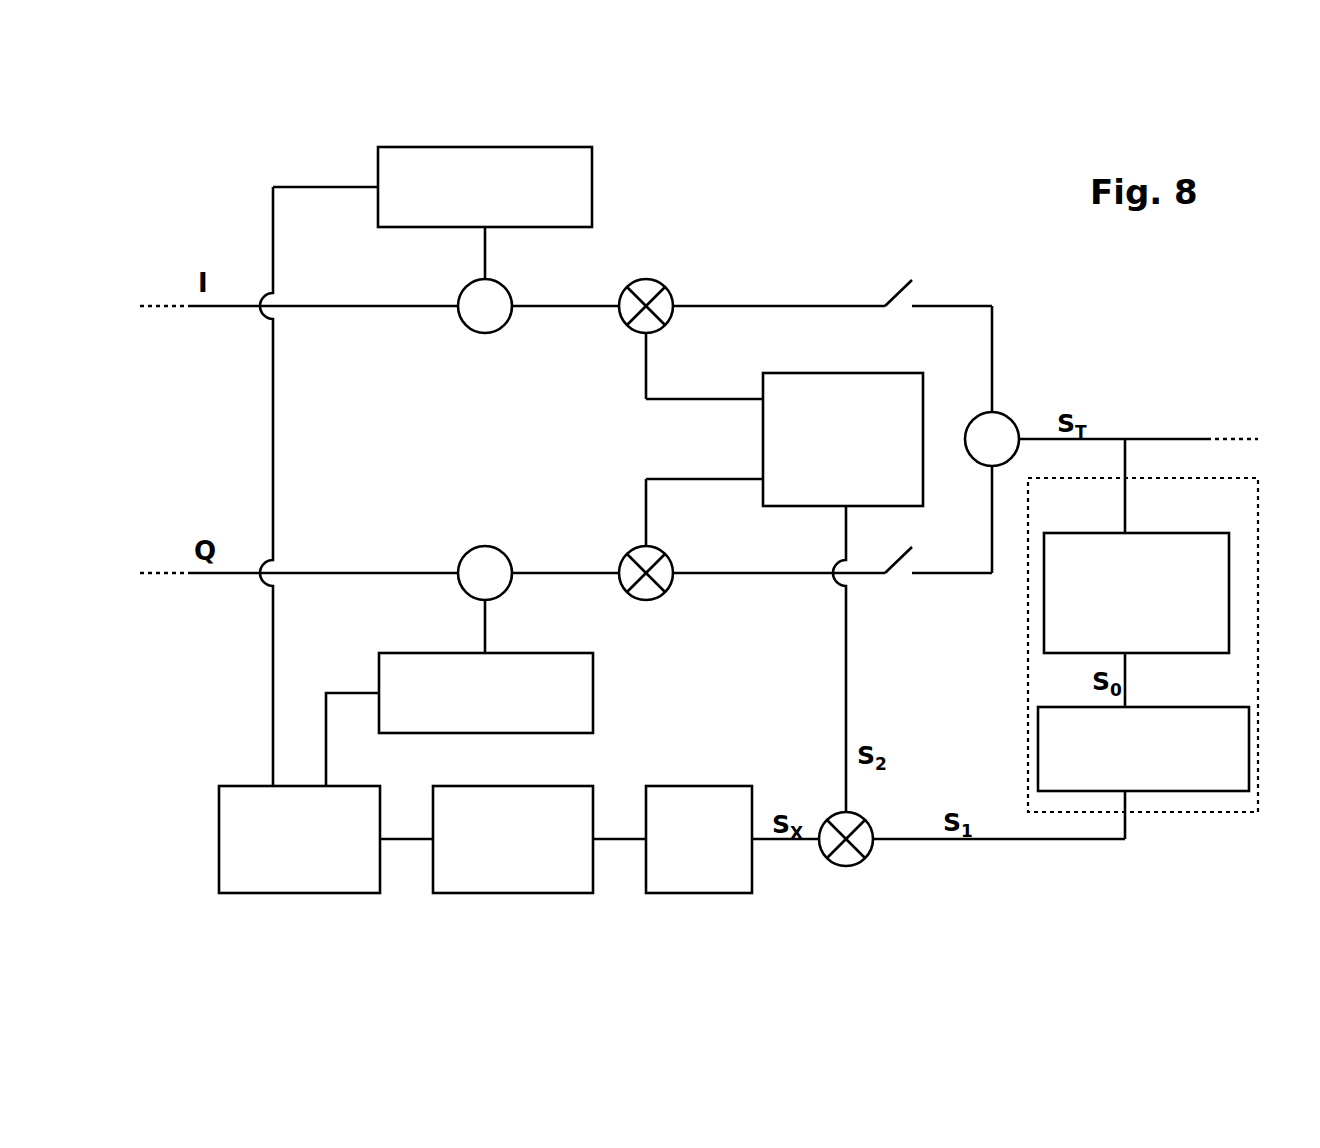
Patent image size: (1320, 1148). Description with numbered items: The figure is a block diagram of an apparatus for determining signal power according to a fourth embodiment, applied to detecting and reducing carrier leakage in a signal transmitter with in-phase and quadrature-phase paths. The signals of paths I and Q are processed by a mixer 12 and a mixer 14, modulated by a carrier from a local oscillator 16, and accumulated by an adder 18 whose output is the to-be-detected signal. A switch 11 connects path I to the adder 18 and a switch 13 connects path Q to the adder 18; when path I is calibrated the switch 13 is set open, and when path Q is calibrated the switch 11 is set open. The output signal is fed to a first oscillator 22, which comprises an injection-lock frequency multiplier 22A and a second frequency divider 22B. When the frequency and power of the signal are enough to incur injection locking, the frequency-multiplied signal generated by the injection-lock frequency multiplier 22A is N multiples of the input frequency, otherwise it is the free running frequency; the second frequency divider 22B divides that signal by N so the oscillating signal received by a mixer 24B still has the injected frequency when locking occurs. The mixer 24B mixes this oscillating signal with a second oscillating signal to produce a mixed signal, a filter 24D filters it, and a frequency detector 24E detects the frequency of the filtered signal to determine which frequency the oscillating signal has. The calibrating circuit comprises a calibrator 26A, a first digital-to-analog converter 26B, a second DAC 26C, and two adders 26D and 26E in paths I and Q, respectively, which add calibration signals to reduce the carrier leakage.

The switch 11 is at (900, 292).
The mixer 12 is at (655, 283).
The switch 13 is at (900, 559).
The mixer 14 is at (626, 555).
The local oscillator 16 is at (923, 373).
The adder 18 is at (1011, 420).
The first oscillator 22 is at (1028, 680).
The injection-lock frequency multiplier 22A is at (1204, 533).
The second frequency divider 22B is at (1205, 707).
The mixer 24B is at (865, 823).
The filter 24D is at (752, 786).
The frequency detector 24E is at (615, 765).
The calibrator 26A is at (219, 786).
The first digital-to-analog converter 26B is at (592, 147).
The second DAC 26C is at (379, 653).
The adder 26D is at (467, 324).
The adder 26E is at (468, 555).